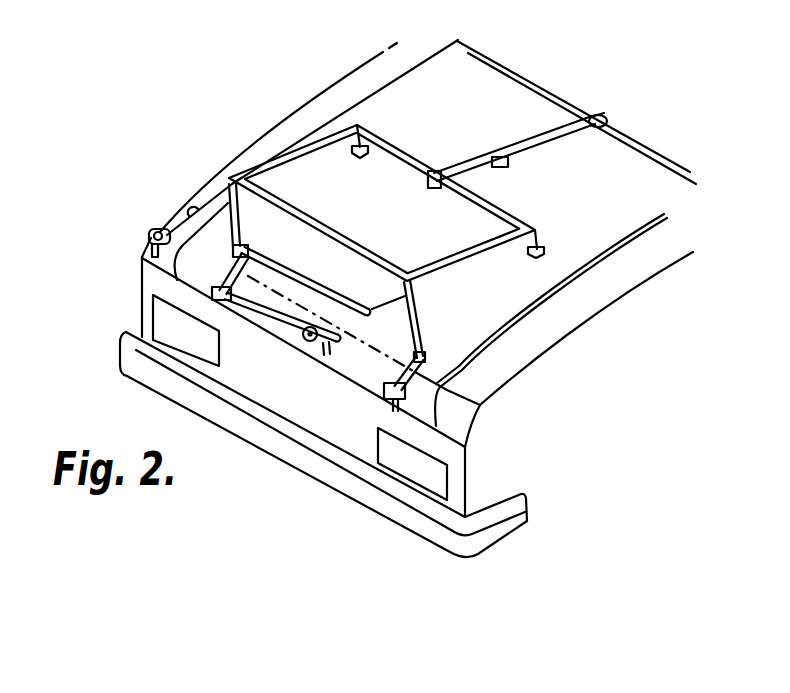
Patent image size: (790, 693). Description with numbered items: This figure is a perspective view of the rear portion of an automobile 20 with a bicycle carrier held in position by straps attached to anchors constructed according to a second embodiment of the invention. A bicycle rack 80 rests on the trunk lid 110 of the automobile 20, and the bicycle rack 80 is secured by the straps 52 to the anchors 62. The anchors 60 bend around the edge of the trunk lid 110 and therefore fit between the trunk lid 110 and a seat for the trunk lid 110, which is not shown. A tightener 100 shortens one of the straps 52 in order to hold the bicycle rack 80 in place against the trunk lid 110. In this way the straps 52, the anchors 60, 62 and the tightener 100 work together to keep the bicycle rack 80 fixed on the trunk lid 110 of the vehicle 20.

The vehicle 20 is at (300, 469).
The straps 52 is at (525, 143).
The anchors 60 is at (219, 301).
The anchors 62 is at (602, 116).
The bicycle rack 80 is at (469, 275).
The tightener 100 is at (506, 166).
The trunk lid 110 is at (573, 245).